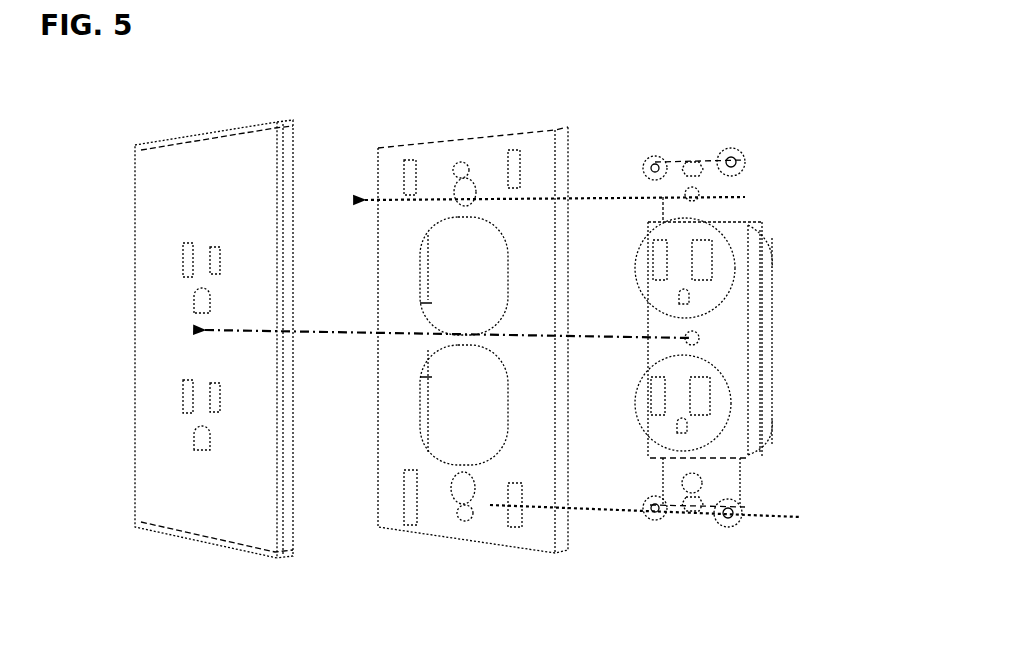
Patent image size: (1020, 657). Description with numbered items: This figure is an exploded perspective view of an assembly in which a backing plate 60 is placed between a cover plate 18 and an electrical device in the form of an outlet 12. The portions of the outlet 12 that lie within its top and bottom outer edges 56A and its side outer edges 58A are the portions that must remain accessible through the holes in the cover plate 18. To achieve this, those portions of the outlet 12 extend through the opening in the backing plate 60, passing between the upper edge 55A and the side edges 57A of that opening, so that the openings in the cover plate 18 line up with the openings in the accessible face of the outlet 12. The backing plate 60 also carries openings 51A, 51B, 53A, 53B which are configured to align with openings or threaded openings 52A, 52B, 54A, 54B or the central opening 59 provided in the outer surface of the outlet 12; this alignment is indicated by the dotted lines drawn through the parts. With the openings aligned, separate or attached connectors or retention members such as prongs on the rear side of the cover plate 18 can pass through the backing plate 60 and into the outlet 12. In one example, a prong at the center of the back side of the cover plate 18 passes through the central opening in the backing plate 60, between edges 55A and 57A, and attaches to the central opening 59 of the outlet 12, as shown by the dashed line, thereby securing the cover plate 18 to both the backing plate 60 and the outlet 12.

The outlet 12 is at (759, 325).
The cover plate 18 is at (100, 138).
The backing plate 60 is at (427, 327).
The opening 51A is at (513, 170).
The opening 51B is at (517, 503).
The opening 52A is at (730, 160).
The opening 52B is at (725, 514).
The opening 53A is at (463, 190).
The opening 53B is at (468, 485).
The opening 54A is at (694, 193).
The opening 54B is at (692, 488).
The upper edge of the backing plate opening 55A is at (455, 440).
The top and bottom outer edges 56A is at (682, 455).
The side edges of the backing plate opening 57A is at (505, 420).
The side outer edges 58A is at (733, 427).
The central opening 59 is at (694, 340).